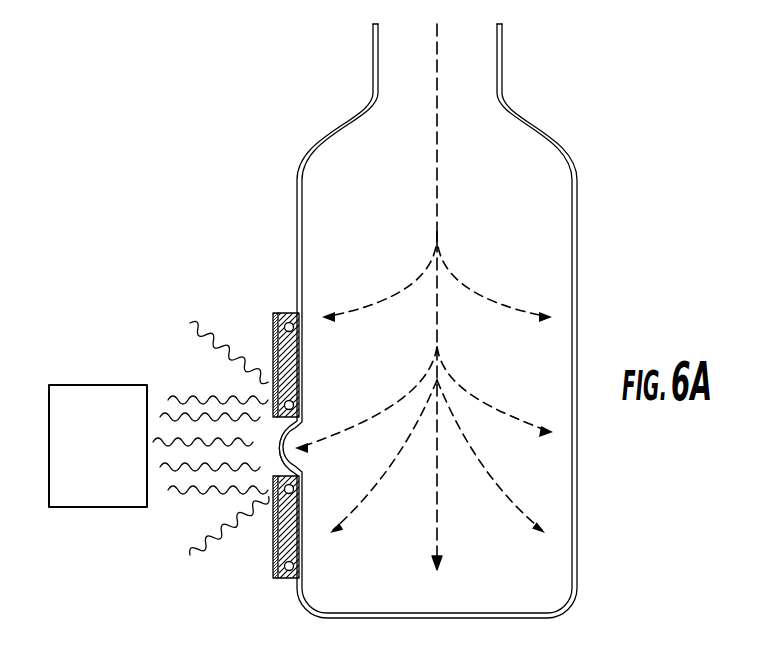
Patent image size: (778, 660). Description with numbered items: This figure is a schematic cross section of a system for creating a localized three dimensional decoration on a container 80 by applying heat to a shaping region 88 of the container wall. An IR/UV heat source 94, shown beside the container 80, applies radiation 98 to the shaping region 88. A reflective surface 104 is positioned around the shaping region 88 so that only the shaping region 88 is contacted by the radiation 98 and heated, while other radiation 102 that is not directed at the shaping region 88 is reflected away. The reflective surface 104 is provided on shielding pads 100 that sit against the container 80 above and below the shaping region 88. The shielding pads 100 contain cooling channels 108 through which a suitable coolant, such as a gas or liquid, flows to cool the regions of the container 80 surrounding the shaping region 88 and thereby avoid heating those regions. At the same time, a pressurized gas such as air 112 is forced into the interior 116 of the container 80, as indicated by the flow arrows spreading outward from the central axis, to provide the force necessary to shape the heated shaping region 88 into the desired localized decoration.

The container 80 is at (578, 200).
The shaping region 88 is at (300, 430).
The IR/UV heat source 94 is at (112, 509).
The radiation 98 is at (199, 490).
The shielding pads 100 is at (288, 556).
The other radiation 102 is at (208, 338).
The reflective surface 104 is at (273, 314).
The cooling channels 108 is at (289, 323).
The air 112 is at (439, 182).
The interior 116 is at (538, 372).